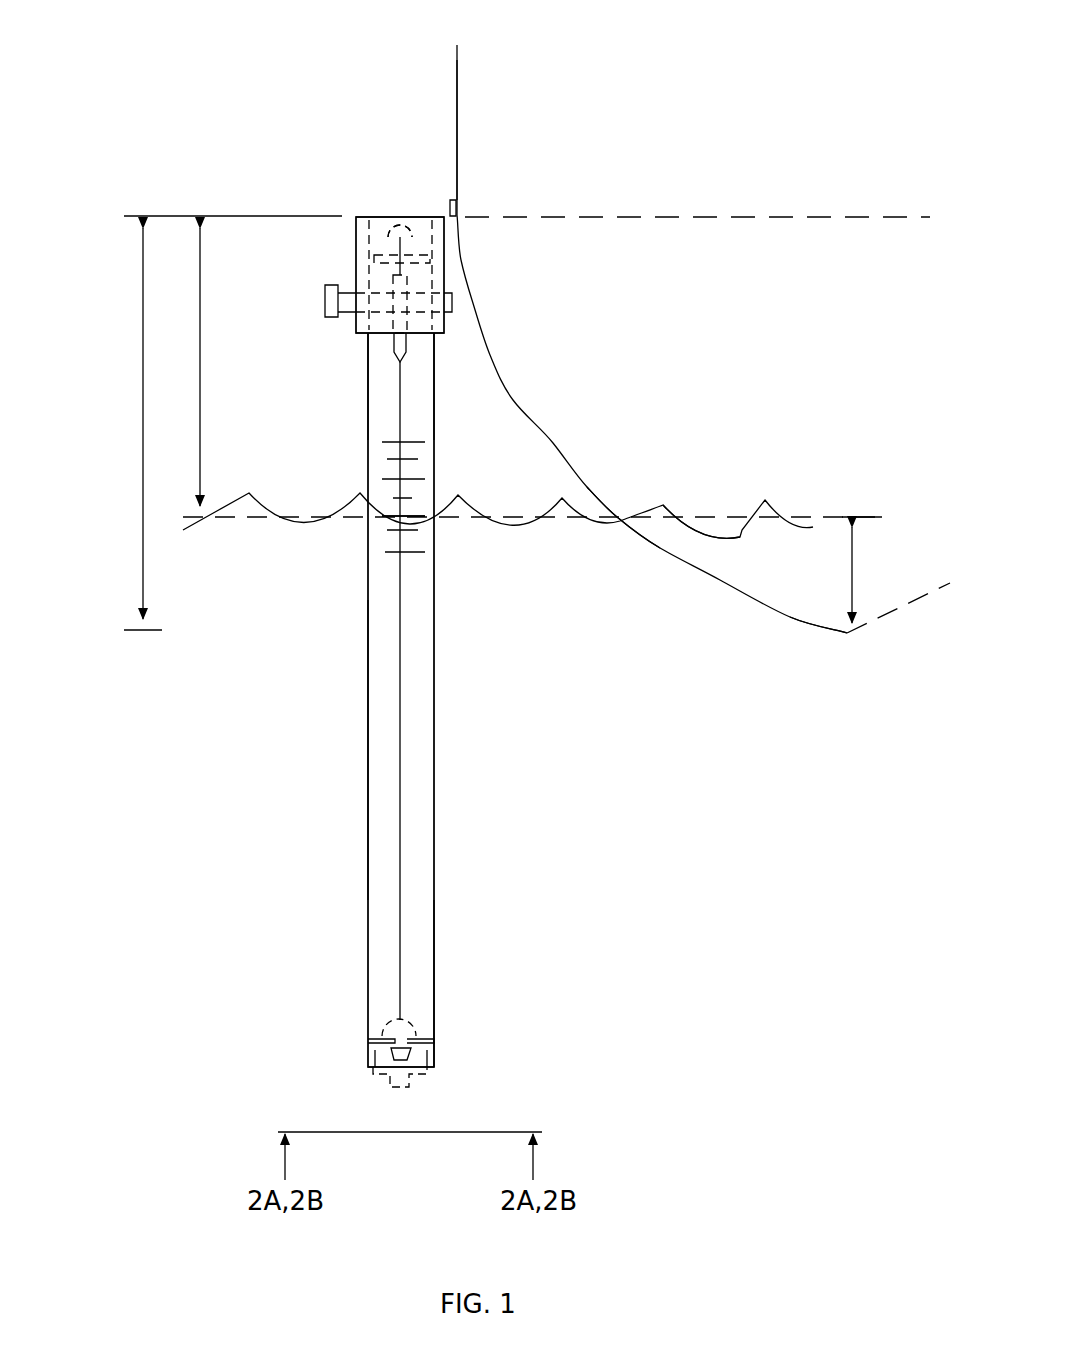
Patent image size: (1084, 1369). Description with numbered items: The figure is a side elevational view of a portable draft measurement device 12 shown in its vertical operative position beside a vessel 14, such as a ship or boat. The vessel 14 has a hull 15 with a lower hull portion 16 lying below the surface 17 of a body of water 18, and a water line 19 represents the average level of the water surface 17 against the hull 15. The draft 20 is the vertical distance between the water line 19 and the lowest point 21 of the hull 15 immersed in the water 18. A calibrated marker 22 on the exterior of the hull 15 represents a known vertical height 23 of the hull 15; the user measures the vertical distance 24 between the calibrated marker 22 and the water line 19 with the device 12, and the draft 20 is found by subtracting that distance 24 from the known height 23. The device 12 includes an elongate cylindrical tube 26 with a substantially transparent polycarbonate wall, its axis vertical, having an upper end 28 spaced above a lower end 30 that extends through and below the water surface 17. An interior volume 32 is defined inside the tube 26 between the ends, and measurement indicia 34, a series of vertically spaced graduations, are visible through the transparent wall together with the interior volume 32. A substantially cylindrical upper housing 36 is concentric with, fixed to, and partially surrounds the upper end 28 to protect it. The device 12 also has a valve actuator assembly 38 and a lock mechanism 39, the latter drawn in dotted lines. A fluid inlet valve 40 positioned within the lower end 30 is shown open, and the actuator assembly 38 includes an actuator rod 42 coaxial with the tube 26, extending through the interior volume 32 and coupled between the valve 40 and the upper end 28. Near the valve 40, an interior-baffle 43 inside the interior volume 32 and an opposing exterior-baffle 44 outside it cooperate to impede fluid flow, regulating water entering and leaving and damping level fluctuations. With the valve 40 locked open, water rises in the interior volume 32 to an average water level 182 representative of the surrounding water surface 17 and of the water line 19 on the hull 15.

The portable draft measurement device 12 is at (388, 183).
The vessel 14 is at (556, 92).
The hull 15 is at (457, 78).
The lower hull portion 16 is at (722, 583).
The surface 17 is at (462, 497).
The body of water 18 is at (548, 642).
The water line 19 is at (720, 515).
The draft 20 is at (855, 572).
The lowest point 21 is at (845, 636).
The calibrated marker 22 is at (447, 198).
The vertical height 23 is at (140, 455).
The vertical distance 24 is at (203, 318).
The tube 26 is at (435, 647).
The upper end 28 is at (356, 283).
The lower end 30 is at (435, 962).
The interior volume 32 is at (420, 745).
The measurement indicia 34 is at (412, 553).
The upper housing 36 is at (356, 242).
The valve actuator assembly 38 is at (390, 367).
The lock mechanism 39 is at (384, 310).
The fluid inlet valve 40 is at (366, 1050).
The actuator rod 42 is at (400, 810).
The interior-baffle 43 is at (405, 1022).
The exterior-baffle 44 is at (420, 1076).
The average water level 182 is at (383, 517).